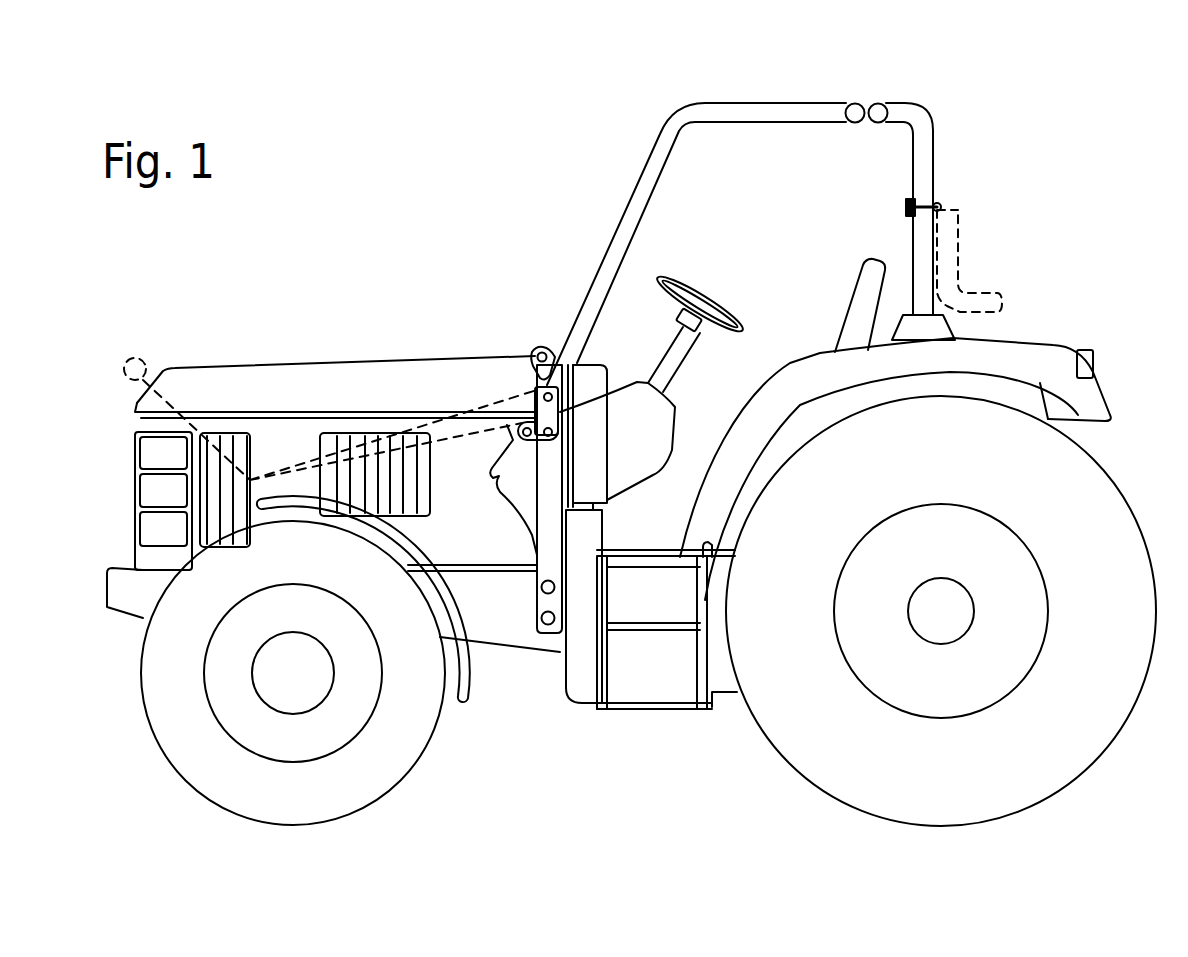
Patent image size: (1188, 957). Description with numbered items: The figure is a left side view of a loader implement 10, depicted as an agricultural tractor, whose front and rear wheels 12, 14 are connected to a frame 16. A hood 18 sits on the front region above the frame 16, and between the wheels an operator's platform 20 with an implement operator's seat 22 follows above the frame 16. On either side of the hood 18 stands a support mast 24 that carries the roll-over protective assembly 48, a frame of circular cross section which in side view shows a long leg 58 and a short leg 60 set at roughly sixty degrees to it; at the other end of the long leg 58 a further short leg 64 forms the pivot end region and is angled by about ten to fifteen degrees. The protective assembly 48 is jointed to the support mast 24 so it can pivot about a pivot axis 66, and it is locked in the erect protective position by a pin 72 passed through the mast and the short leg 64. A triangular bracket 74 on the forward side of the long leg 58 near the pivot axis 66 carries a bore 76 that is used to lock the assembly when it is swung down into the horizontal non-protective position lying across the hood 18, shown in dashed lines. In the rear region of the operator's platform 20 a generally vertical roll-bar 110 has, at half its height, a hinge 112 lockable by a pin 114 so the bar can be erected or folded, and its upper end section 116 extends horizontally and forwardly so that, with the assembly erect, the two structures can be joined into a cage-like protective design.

The loader implement 10 is at (518, 250).
The front wheel 12 is at (175, 745).
The rear wheel 14 is at (1030, 773).
The frame 16 is at (517, 623).
The hood 18 is at (217, 380).
The operator's platform 20 is at (627, 550).
The implement operator's seat 22 is at (857, 297).
The support mast 24 is at (530, 490).
The roll-over protective assembly 48 is at (617, 223).
The long leg 58 is at (663, 157).
The short leg 60 is at (793, 113).
The short leg 64 is at (575, 365).
The pivot axis 66 is at (535, 393).
The pin 72 is at (560, 424).
The bracket 74 is at (536, 352).
The bore 76 is at (550, 350).
The roll-bar 110 is at (925, 150).
The hinge 112 is at (940, 207).
The pin 114 is at (908, 205).
The upper end section 116 is at (893, 110).